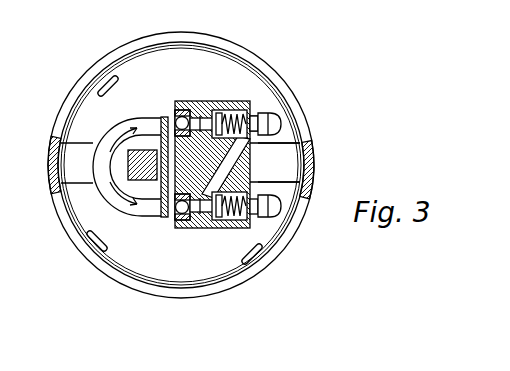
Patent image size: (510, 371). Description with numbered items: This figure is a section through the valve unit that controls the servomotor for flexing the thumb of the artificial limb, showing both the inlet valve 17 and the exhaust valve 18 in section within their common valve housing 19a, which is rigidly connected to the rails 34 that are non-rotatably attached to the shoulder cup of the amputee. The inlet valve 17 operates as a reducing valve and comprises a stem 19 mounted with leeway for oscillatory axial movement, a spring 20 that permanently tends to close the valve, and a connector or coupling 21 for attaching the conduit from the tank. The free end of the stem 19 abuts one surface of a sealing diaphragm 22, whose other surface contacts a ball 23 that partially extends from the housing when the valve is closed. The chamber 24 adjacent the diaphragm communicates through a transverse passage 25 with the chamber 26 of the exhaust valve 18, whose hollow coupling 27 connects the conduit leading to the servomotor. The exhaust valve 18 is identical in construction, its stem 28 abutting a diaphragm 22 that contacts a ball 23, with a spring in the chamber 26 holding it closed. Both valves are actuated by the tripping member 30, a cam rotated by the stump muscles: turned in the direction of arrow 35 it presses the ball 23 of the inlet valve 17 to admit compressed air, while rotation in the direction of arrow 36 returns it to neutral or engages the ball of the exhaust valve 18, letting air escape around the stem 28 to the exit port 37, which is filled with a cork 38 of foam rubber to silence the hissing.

The inlet valve 17 is at (232, 228).
The exhaust valve 18 is at (243, 101).
The valve stem 19 is at (216, 228).
The valve housing 19a is at (200, 228).
The spring 20 is at (243, 228).
The connector or coupling 21 is at (265, 216).
The sealing diaphragm 22 is at (179, 112).
The ball 23 is at (181, 121).
The chamber 24 is at (184, 222).
The transverse passage 25 is at (262, 155).
The chamber 26 is at (254, 104).
The hollow coupling 27 is at (282, 121).
The stem 28 is at (216, 110).
The tripping member 30 is at (140, 118).
The rails 34 is at (309, 186).
The arrow 35 is at (118, 190).
The arrow 36 is at (118, 148).
The exit port 37 is at (204, 110).
The cork 38 is at (192, 110).